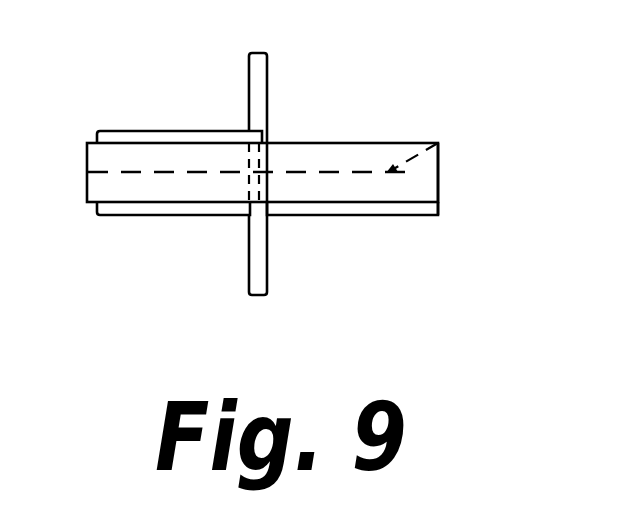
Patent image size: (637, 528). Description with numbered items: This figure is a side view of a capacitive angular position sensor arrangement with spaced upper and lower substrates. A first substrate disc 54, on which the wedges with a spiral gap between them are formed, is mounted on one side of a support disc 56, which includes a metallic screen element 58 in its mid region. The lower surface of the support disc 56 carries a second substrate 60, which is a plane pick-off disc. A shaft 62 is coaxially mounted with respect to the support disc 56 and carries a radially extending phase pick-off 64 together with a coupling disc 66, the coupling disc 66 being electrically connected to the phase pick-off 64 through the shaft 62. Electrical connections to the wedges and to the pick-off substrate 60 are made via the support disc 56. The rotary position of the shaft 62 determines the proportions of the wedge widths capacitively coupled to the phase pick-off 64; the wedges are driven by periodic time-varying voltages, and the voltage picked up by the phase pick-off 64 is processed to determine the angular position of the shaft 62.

The first substrate disc 54 is at (393, 141).
The support disc 56 is at (440, 187).
The metallic screen element 58 is at (445, 141).
The second substrate 60 is at (337, 202).
The shaft 62 is at (263, 87).
The phase pick-off 64 is at (162, 130).
The coupling disc 66 is at (187, 213).